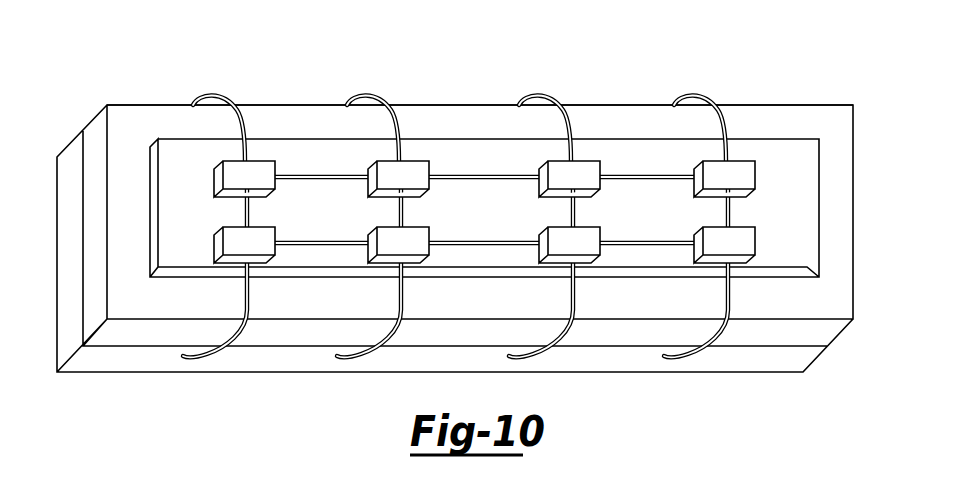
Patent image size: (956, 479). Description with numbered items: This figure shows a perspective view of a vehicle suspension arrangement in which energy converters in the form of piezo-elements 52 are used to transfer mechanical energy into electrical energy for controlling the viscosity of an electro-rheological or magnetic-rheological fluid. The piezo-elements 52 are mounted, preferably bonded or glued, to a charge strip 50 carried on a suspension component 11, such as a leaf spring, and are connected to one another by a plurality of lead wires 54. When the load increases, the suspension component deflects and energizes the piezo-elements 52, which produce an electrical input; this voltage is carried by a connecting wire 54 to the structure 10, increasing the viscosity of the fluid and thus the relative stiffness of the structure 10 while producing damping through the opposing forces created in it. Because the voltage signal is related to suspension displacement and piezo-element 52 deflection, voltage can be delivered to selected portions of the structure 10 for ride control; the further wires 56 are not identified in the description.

The structure 10 is at (795, 357).
The suspension component 11 is at (832, 105).
The charge strip 50 is at (797, 197).
The piezo-elements 52 is at (410, 170).
The lead wires 54 is at (318, 172).
The lead wires 56 is at (250, 331).